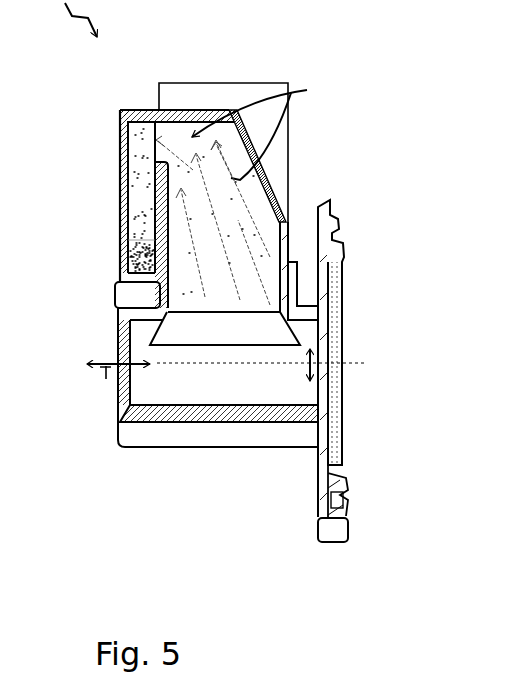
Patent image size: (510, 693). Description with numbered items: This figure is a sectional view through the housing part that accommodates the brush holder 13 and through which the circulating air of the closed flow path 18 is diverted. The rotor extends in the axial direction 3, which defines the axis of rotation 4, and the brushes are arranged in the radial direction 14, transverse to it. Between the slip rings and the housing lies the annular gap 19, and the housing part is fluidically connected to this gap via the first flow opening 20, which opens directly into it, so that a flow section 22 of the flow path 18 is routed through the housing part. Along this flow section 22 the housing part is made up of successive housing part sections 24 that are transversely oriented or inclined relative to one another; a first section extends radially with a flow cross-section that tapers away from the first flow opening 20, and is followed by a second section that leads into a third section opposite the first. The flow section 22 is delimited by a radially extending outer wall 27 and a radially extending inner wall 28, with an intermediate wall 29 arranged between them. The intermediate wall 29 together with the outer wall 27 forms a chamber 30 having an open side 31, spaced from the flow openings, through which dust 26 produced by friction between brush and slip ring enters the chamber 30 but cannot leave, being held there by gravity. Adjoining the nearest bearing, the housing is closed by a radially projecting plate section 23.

The brush holder 13 is at (220, 83).
The housing part section 24 is at (128, 108).
The flow path 18 is at (307, 98).
The flow section 22 is at (326, 120).
The open side 31 is at (127, 150).
The chamber 30 is at (127, 194).
The outer wall 27 is at (115, 238).
The dust 26 is at (127, 263).
The intermediate wall 29 is at (165, 253).
The first flow opening 20 is at (213, 326).
The radial direction 14 is at (309, 357).
The axial direction 3 is at (100, 397).
The axis of rotation 4 is at (80, 398).
The inner wall 28 is at (292, 246).
The annular gap 19 is at (178, 403).
The plate section 23 is at (318, 522).